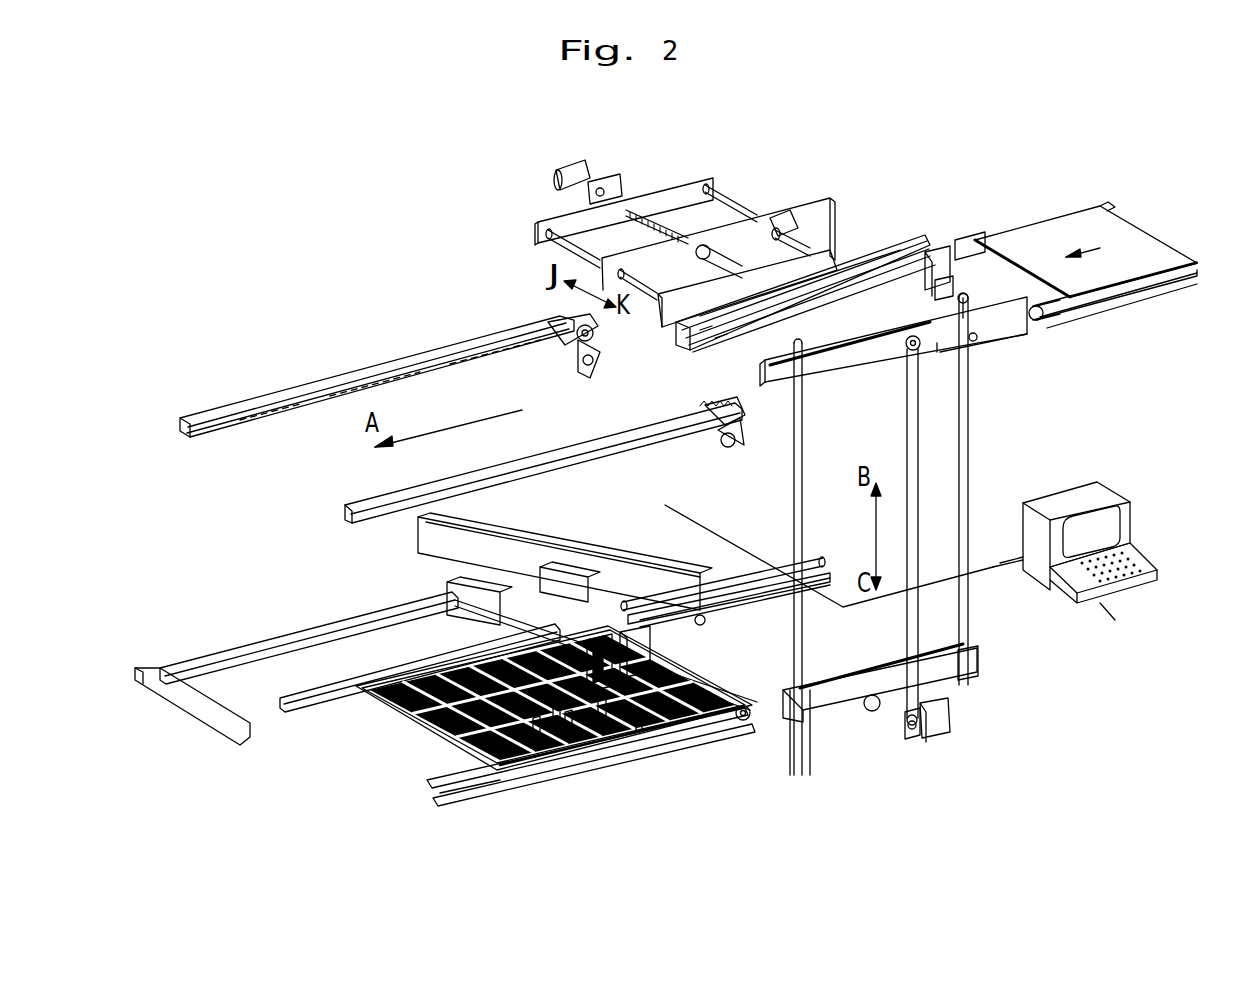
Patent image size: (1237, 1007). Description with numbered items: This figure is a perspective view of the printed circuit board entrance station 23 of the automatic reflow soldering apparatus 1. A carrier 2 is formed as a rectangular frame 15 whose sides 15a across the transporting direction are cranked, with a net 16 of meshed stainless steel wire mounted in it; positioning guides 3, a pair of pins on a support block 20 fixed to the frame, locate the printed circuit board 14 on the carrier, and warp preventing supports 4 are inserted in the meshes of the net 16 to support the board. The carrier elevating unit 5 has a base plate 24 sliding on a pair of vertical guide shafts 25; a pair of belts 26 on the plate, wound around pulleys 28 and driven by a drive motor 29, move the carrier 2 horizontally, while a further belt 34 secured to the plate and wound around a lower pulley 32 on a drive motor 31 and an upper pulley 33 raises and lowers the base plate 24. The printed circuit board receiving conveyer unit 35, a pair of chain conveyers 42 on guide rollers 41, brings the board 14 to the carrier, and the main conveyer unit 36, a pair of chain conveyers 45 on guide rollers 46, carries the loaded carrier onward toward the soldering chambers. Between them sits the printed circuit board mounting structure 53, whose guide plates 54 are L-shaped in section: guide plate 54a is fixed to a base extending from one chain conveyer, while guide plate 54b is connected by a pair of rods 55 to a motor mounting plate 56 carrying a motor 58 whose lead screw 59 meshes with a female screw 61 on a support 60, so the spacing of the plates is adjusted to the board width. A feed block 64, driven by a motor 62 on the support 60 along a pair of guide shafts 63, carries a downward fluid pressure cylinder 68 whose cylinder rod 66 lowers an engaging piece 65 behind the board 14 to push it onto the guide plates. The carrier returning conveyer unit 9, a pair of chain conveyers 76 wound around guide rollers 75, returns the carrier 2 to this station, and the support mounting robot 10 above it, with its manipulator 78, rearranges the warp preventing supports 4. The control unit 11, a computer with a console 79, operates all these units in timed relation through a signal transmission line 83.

The automatic reflow soldering apparatus 1 is at (412, 212).
The carrier 2 is at (377, 709).
The positioning guides 3 is at (640, 735).
The warp preventing supports 4 is at (567, 742).
The carrier elevating unit 5 is at (945, 762).
The carrier returning conveyer unit 9 is at (494, 792).
The support mounting robot 10 is at (430, 562).
The control unit 11 is at (1128, 600).
The printed circuit board 14 is at (1135, 224).
The frame 15 is at (433, 742).
The sides of the frame 15a is at (347, 655).
The net 16 is at (410, 722).
The support block 20 is at (555, 740).
The printed circuit board entrance station 23 is at (852, 776).
The base plate 24 is at (790, 740).
The vertical guide shafts 25 is at (804, 440).
The belts 26 is at (718, 585).
The pulleys 28 is at (818, 580).
The drive motor 29 is at (875, 712).
The drive motor 31 is at (948, 735).
The lower pulley 32 is at (940, 700).
The upper pulley 33 is at (905, 366).
The belt 34 is at (920, 458).
The printed circuit board receiving conveyer unit 35 is at (1165, 292).
The main conveyer unit 36 is at (436, 345).
The guide rollers 41 is at (1058, 316).
The chain conveyers 42 is at (965, 242).
The chain conveyers 45 is at (590, 372).
The guide rollers 46 is at (572, 350).
The printed circuit board mounting structure 53 is at (666, 206).
The guide plates 54 is at (906, 222).
The guide plate 54a is at (1008, 340).
The guide plate 54b is at (878, 240).
The rods 55 is at (545, 235).
The motor mounting plate 56 is at (652, 190).
The motor 58 is at (578, 165).
The lead screw 59 is at (660, 215).
The support 60 is at (795, 206).
The female screw 61 is at (695, 238).
The motor 62 is at (762, 208).
The guide shafts 63 is at (716, 336).
The feed block 64 is at (932, 250).
The engaging piece 65 is at (905, 312).
The cylinder rod 66 is at (969, 300).
The fluid pressure cylinder 68 is at (956, 284).
The guide rollers 75 is at (730, 722).
The chain conveyers 76 is at (292, 696).
The manipulator 78 is at (598, 640).
The console 79 is at (1135, 520).
The signal transmission line 83 is at (988, 578).